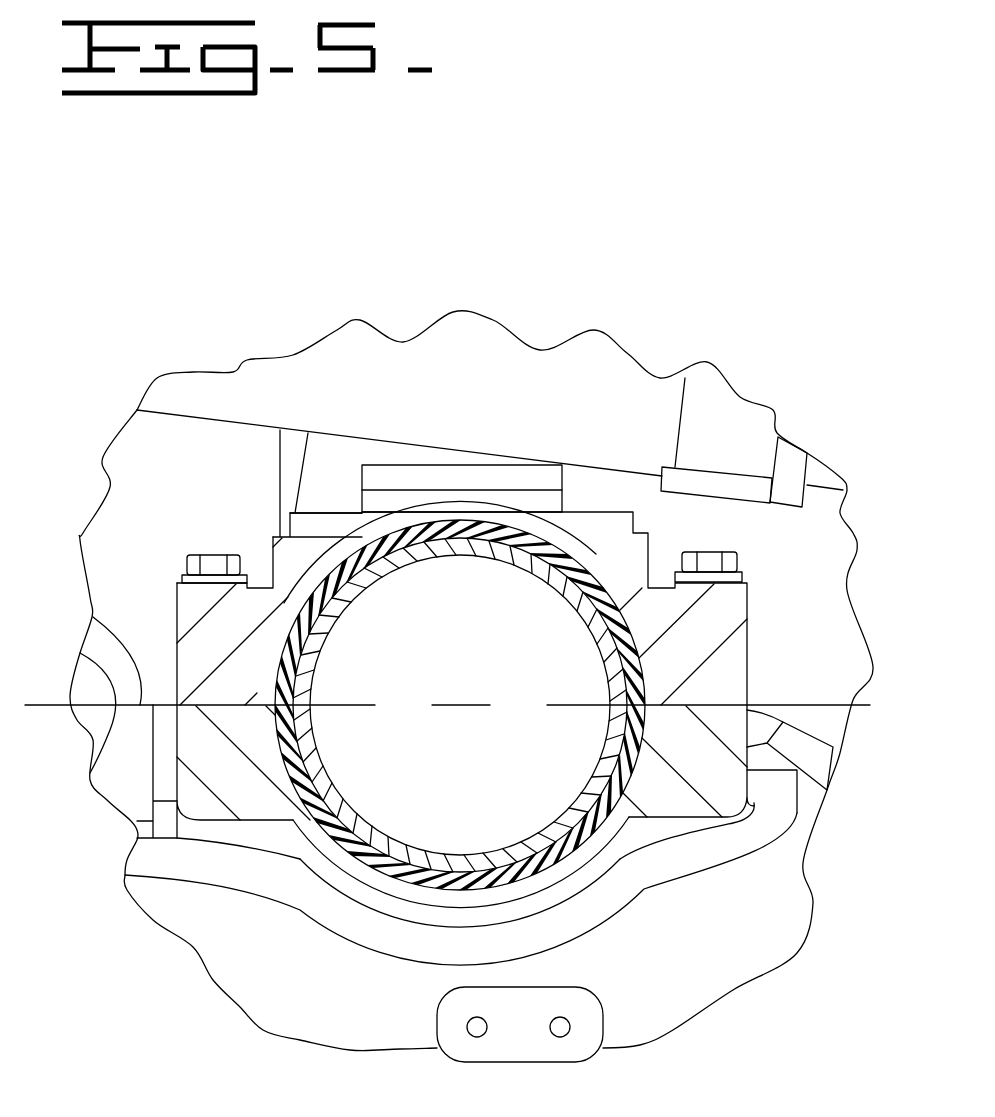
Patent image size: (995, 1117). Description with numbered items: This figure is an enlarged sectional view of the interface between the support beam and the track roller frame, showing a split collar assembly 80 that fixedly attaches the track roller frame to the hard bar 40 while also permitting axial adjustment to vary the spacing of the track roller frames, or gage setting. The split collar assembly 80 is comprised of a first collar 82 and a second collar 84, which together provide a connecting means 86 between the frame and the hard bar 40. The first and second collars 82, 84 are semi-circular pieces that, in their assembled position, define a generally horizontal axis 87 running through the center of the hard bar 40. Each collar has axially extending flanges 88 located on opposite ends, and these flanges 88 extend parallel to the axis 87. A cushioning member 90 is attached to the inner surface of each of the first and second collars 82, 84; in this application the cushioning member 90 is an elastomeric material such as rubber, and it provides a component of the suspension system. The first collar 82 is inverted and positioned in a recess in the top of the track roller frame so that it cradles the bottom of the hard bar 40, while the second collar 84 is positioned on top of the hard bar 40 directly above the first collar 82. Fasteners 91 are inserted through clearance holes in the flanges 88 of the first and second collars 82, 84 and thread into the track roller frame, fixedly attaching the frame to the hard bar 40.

The hard bar 40 is at (352, 808).
The split collar assembly 80 is at (157, 457).
The first collar 82 is at (533, 893).
The second collar 84 is at (497, 510).
The connecting means 86 is at (812, 647).
The horizontal axis 87 is at (460, 705).
The axially extending flanges 88 is at (177, 612).
The cushioning member 90 is at (552, 560).
The fasteners 91 is at (203, 552).